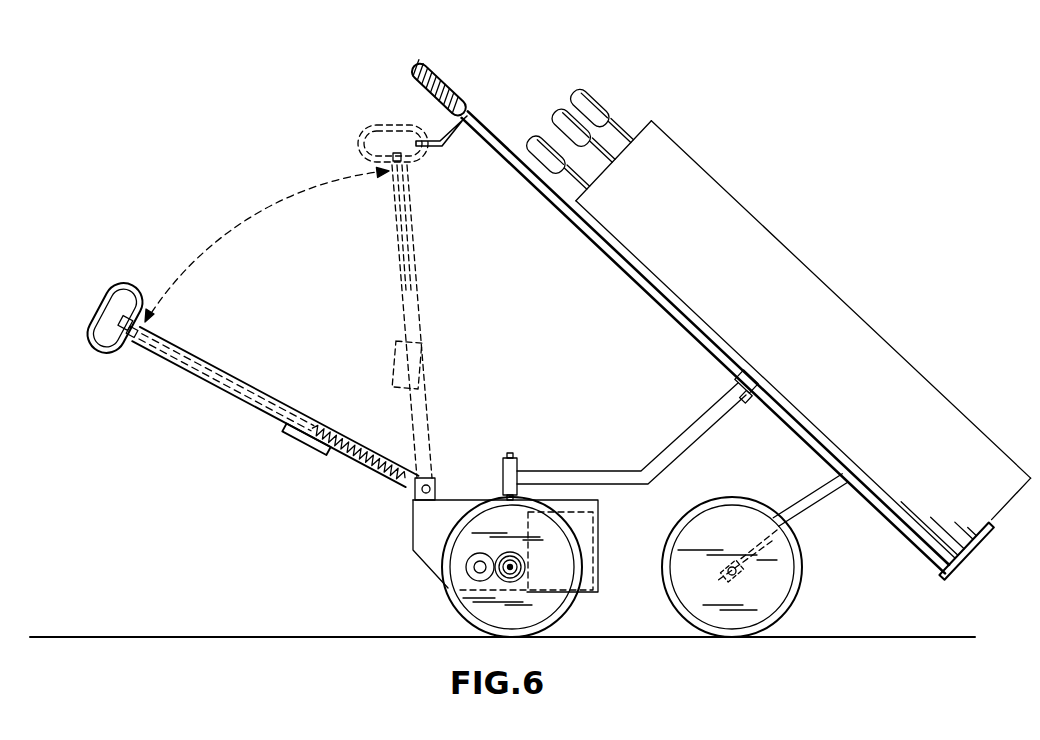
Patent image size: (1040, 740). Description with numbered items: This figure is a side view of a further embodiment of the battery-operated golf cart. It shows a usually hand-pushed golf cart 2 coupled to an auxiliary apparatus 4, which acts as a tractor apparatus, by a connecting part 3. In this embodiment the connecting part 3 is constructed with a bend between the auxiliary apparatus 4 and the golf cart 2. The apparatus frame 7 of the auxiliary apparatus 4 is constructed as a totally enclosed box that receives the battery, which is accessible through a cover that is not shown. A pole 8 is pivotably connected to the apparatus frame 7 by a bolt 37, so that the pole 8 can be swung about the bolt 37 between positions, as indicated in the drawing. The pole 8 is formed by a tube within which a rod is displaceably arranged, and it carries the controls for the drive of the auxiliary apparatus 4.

The golf cart 2 is at (741, 211).
The connecting part 3 is at (683, 434).
The auxiliary apparatus 4 is at (425, 569).
The apparatus frame 7 is at (464, 501).
The pole 8 is at (184, 370).
The bolt 37 is at (414, 492).